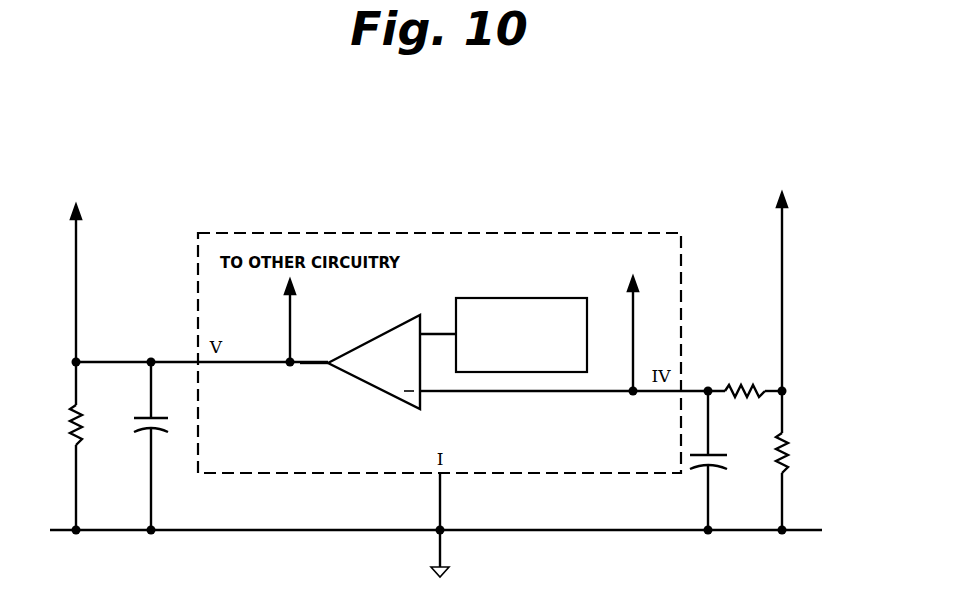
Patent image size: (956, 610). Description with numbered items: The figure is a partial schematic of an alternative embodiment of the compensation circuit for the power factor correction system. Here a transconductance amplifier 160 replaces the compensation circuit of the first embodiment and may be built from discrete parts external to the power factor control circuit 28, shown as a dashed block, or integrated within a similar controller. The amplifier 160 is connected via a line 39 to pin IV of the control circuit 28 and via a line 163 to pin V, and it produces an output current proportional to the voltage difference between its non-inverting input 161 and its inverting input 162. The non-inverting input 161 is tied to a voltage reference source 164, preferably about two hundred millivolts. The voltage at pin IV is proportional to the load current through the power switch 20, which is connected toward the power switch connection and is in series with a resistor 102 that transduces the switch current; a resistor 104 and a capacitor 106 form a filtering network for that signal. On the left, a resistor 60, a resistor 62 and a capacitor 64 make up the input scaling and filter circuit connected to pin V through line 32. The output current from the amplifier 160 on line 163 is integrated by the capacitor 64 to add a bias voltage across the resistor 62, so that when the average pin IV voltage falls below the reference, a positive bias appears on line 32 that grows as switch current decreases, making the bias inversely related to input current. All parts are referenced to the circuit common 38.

The power switch 20 is at (772, 180).
The power factor control circuit 28 is at (410, 233).
The line 32 is at (170, 360).
The circuit common 38 is at (443, 548).
The line 39 is at (539, 393).
The resistor 60 is at (66, 200).
The resistor 62 is at (70, 429).
The capacitor 64 is at (141, 417).
The resistor 102 is at (790, 465).
The resistor 104 is at (741, 384).
The capacitor 106 is at (765, 438).
The transconductance amplifier 160 is at (388, 330).
The non-inverting input 161 is at (425, 328).
The inverting input 162 is at (421, 396).
The line 163 is at (325, 370).
The voltage reference source 164 is at (561, 322).